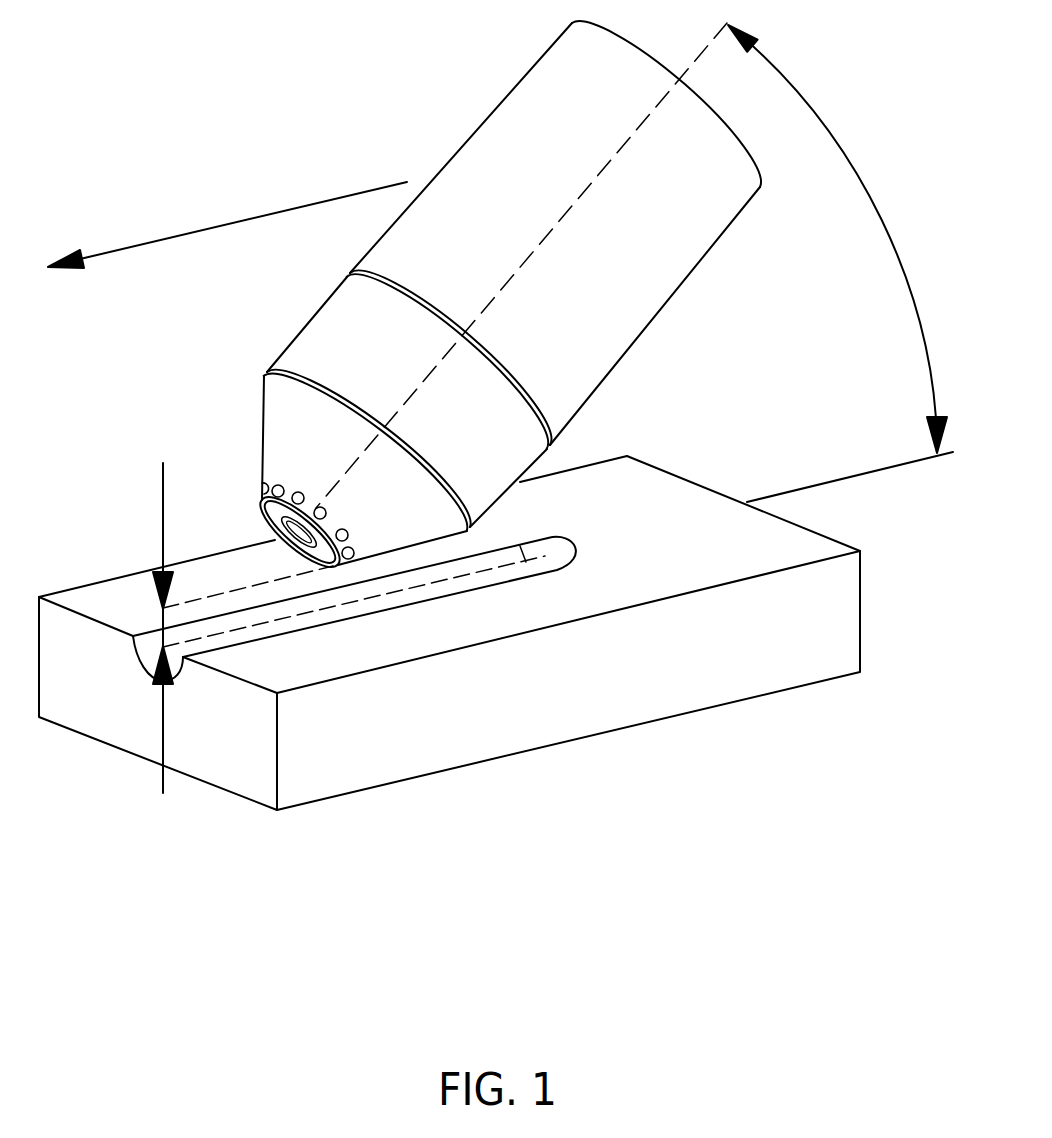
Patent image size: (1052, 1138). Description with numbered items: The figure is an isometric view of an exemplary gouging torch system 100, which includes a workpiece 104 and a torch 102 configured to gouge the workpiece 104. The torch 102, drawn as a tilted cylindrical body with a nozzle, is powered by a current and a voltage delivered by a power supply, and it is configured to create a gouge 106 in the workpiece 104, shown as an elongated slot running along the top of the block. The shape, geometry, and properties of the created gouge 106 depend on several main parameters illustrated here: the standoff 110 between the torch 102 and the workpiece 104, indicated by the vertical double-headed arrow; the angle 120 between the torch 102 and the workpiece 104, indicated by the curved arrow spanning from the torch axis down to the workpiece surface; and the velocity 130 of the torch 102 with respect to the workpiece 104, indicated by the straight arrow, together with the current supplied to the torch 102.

The gouging torch system 100 is at (276, 65).
The torch 102 is at (630, 347).
The workpiece 104 is at (697, 710).
The gouge 106 is at (518, 574).
The standoff 110 is at (161, 561).
The angle 120 is at (863, 183).
The velocity 130 is at (158, 255).